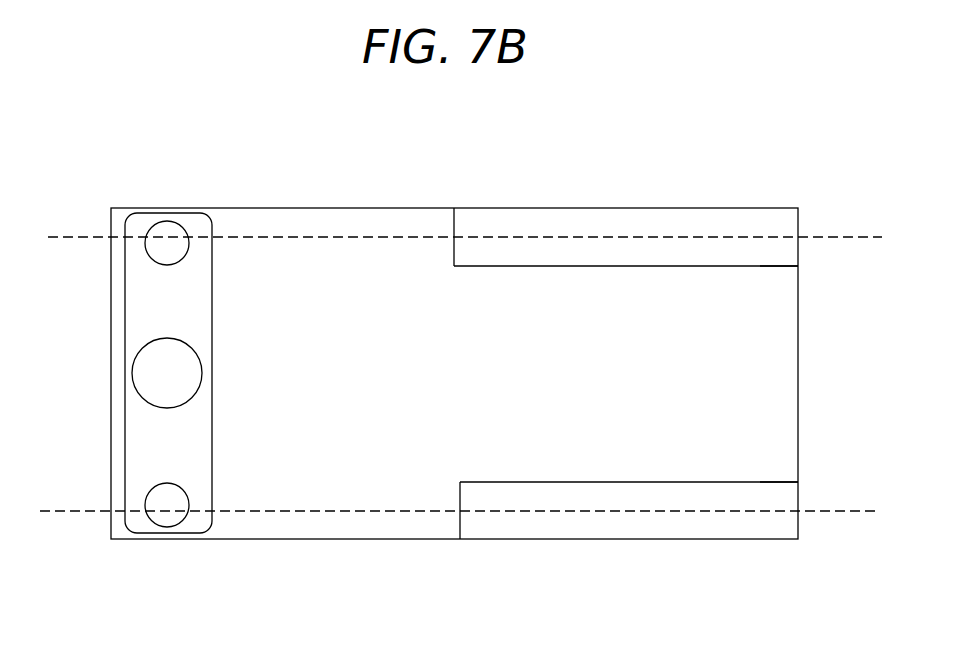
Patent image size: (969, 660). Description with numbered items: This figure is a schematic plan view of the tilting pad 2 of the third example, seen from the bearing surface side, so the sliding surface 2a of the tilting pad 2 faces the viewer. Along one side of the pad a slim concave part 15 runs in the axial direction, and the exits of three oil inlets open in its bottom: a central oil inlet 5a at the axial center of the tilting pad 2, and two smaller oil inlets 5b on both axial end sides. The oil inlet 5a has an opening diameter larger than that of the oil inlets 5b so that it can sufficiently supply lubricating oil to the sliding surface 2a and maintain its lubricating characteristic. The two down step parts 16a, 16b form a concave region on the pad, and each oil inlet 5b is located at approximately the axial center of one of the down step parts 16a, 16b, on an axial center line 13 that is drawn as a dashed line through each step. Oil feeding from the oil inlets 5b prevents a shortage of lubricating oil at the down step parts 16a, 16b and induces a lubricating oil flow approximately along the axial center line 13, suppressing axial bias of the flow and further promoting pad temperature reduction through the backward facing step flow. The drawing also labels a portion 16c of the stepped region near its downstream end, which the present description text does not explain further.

The tilting pad 2 is at (454, 364).
The sliding surface 2a is at (323, 413).
The oil inlet 5a is at (142, 354).
The oil inlet 5b is at (150, 235).
The axial center line 13 is at (838, 237).
The concave part 15 is at (212, 456).
The down step part 16a is at (458, 220).
The down step part 16b is at (647, 220).
The recess end portion 16c is at (782, 266).